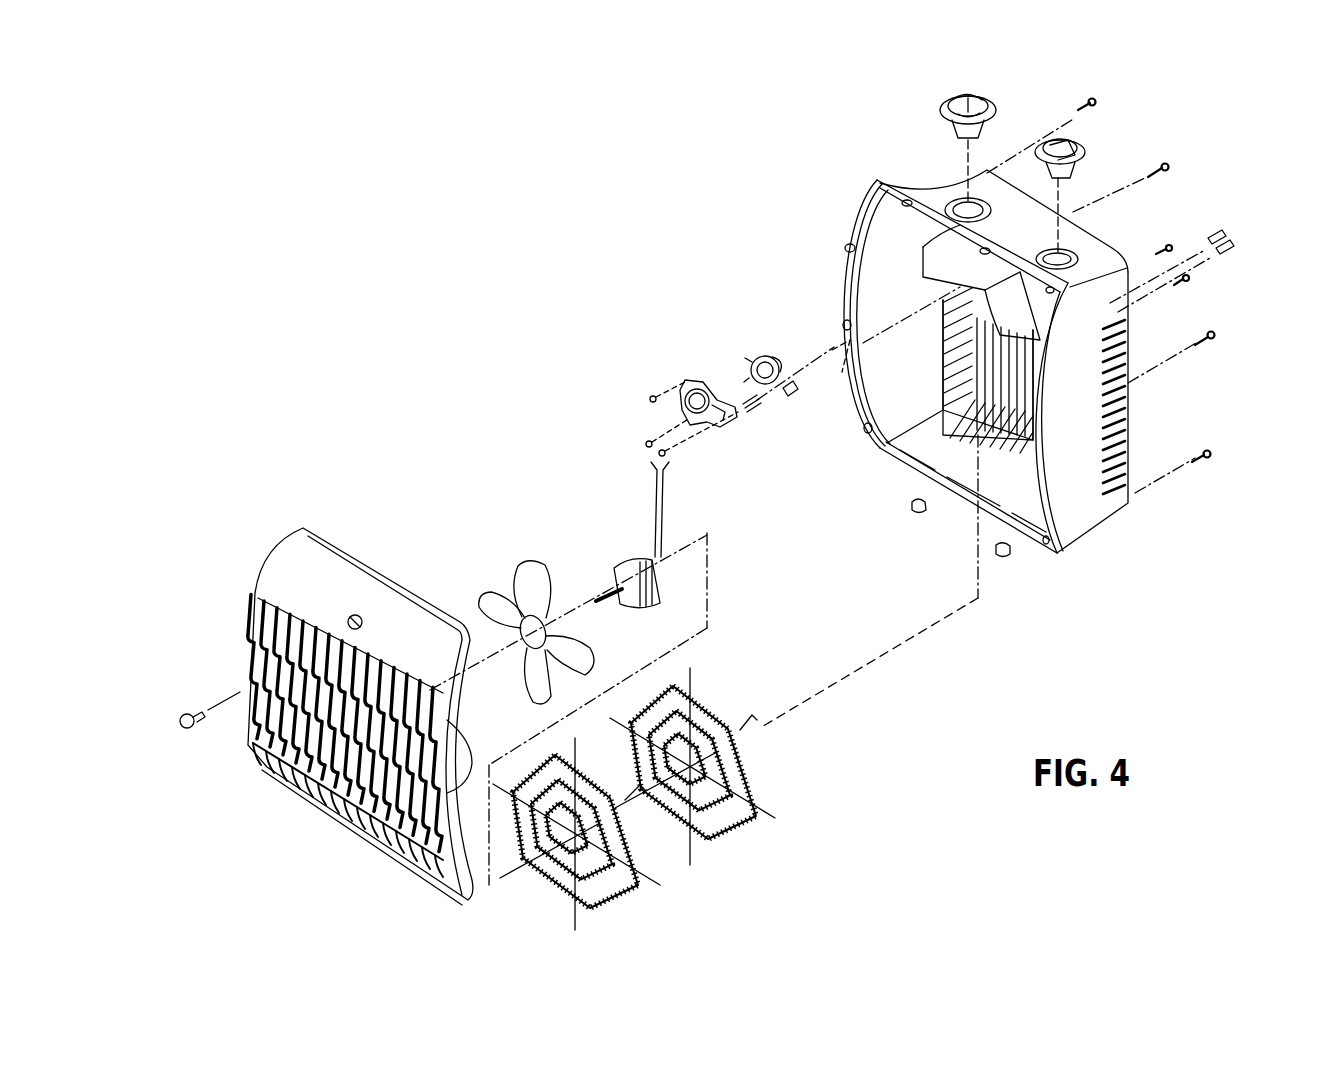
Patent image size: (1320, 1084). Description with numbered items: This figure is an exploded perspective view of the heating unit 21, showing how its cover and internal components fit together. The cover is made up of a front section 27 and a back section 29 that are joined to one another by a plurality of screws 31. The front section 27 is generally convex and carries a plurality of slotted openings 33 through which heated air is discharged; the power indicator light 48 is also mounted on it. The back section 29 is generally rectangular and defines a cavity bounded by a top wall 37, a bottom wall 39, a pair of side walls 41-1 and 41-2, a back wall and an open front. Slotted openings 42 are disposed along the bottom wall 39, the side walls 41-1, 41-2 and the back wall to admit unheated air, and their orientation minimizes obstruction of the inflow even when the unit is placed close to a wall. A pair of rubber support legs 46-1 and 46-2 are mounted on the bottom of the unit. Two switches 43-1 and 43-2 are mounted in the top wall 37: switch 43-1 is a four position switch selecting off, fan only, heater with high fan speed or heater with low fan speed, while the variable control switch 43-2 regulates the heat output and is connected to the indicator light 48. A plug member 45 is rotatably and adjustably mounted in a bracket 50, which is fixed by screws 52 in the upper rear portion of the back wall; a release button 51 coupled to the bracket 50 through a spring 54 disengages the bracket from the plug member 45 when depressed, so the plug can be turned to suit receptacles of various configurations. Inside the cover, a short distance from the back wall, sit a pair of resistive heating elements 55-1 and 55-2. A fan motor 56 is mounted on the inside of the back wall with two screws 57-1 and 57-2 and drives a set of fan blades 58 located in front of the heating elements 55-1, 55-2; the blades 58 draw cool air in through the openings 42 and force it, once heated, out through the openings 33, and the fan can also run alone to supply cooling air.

The heating unit 21 is at (513, 352).
The front section 27 is at (305, 582).
The back section 29 is at (838, 244).
The screws 31 is at (1086, 108).
The slotted openings 33 is at (347, 805).
The top wall 37 is at (1024, 232).
The bottom wall 39 is at (1014, 488).
The side wall 41-1 is at (1092, 465).
The side wall 41-2 is at (902, 307).
The slotted openings 42 is at (950, 370).
The switch 43-1 is at (1082, 147).
The variable control switch 43-2 is at (948, 116).
The plug member 45 is at (766, 355).
The rubber support leg 46-1 is at (1010, 556).
The rubber support leg 46-2 is at (910, 507).
The power indicator light 48 is at (184, 714).
The bracket 50 is at (700, 384).
The release button 51 is at (792, 388).
The screws 52 is at (660, 452).
The spring 54 is at (752, 410).
The heating element 55-1 is at (740, 838).
The heating element 55-2 is at (603, 903).
The fan motor 56 is at (620, 566).
The screw 57-1 is at (1212, 232).
The screw 57-2 is at (1228, 251).
The fan blades 58 is at (528, 575).